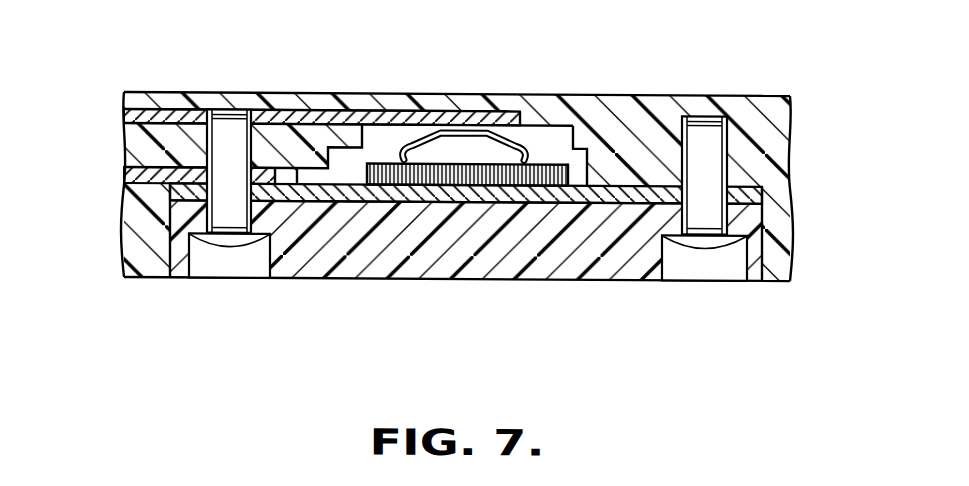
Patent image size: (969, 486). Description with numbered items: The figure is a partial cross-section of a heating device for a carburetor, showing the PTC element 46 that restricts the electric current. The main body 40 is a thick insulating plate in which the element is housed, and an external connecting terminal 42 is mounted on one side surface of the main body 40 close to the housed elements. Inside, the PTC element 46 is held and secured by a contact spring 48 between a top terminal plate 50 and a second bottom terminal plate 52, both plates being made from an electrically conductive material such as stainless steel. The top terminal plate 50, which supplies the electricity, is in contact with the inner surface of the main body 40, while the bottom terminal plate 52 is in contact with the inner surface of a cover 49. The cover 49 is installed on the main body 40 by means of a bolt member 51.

The main body 40 is at (618, 93).
The external connecting terminal 42 is at (158, 167).
The PTC element for restricting the electric current 46 is at (466, 158).
The contact spring 48 is at (518, 140).
The cover 49 is at (537, 263).
The top terminal plate 50 is at (357, 109).
The bolt member 51 is at (228, 244).
The second bottom terminal plate 52 is at (406, 200).